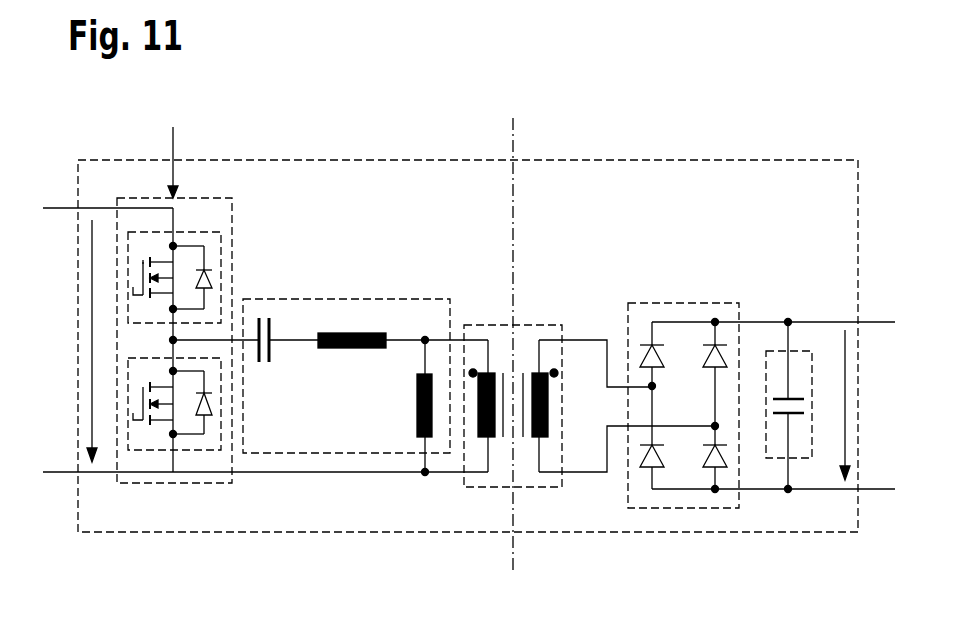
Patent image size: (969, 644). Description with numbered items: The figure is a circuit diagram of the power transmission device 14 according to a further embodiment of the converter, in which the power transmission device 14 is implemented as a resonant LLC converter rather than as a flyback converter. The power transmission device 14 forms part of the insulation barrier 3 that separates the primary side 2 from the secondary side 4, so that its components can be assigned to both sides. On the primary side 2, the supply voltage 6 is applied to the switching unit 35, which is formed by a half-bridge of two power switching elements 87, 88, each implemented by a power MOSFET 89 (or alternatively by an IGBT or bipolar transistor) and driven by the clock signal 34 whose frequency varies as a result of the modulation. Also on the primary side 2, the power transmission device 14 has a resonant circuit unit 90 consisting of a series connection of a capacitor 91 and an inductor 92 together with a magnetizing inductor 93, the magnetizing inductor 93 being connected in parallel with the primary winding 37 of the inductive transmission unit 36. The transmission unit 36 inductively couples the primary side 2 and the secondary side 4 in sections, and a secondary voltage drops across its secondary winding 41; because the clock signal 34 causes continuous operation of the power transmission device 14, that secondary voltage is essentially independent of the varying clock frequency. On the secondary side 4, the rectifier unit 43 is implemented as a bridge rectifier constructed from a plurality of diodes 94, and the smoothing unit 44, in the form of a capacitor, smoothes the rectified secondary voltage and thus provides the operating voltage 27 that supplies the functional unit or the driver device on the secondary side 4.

The power transmission device 14 is at (647, 160).
The insulation barrier 3 is at (513, 130).
The primary side 2 is at (483, 195).
The secondary side 4 is at (562, 195).
The clock signal 34 is at (173, 130).
The supply voltage 6 is at (92, 345).
The switching unit 35 is at (232, 213).
The power switching element 87 is at (197, 231).
The power switching element 88 is at (197, 450).
The power MOSFET 89 is at (165, 262).
The resonant circuit unit 90 is at (422, 299).
The capacitor 91 is at (270, 350).
The inductor 92 is at (362, 333).
The magnetizing inductor 93 is at (417, 421).
The inductive transmission unit 36 is at (482, 325).
The primary winding 37 is at (478, 410).
The secondary winding 41 is at (548, 415).
The rectifier unit 43 is at (652, 303).
The diode 94 is at (647, 465).
The smoothing unit 44 is at (806, 351).
The operating voltage 27 is at (845, 405).